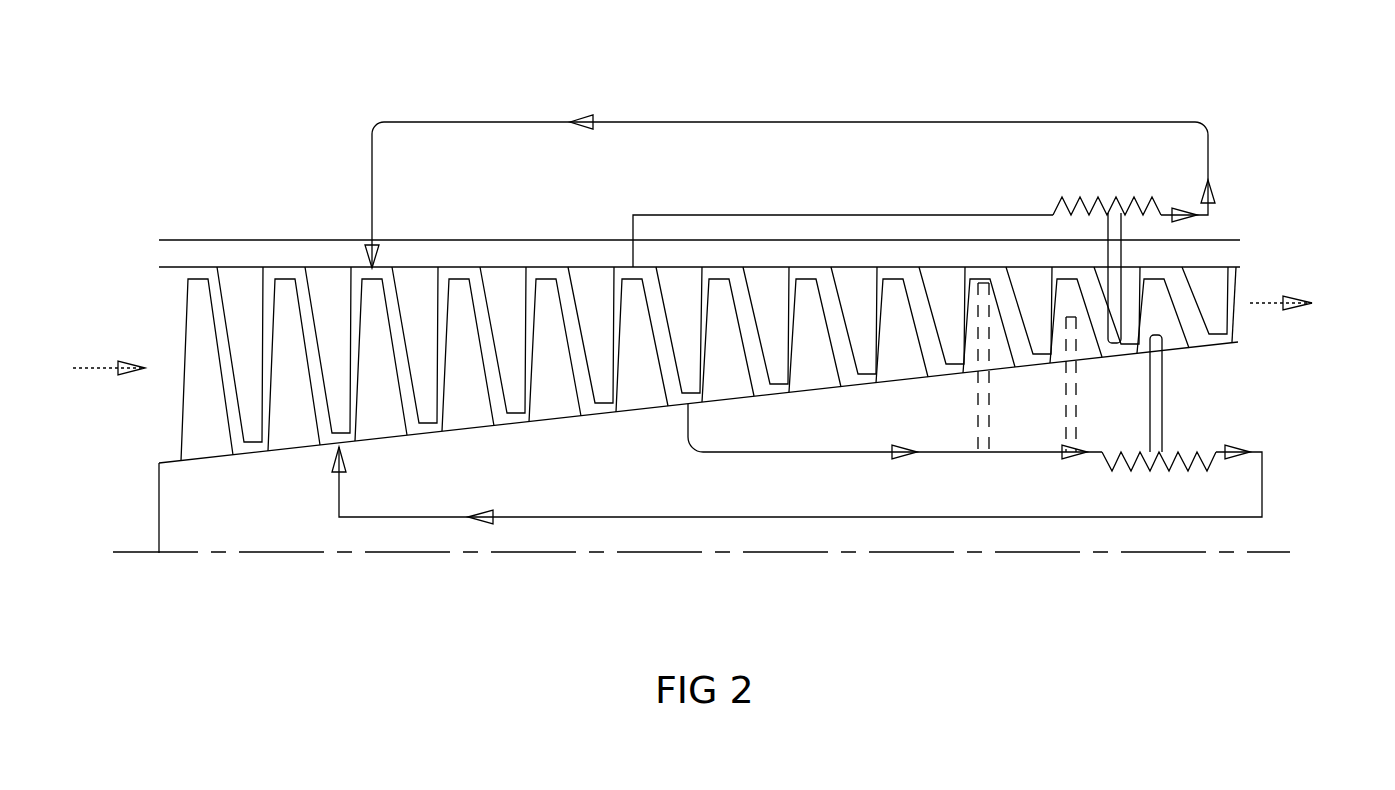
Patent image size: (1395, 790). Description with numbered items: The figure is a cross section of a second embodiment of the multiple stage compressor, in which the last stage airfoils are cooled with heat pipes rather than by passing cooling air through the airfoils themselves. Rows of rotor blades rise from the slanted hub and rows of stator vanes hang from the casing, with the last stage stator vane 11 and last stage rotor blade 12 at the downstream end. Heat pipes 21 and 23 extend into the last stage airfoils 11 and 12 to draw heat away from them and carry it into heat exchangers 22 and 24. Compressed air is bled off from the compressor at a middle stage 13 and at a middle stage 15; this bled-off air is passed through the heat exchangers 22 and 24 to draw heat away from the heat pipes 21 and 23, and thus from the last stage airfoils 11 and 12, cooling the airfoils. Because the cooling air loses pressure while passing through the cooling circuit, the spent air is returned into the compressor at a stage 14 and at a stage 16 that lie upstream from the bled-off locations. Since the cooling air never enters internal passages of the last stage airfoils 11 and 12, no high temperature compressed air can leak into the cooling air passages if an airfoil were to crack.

The last stage stator vane 11 is at (1200, 288).
The last stage rotor blade 12 is at (1158, 300).
The middle stage bleed location 13 is at (637, 215).
The upstream discharge stage 14 is at (370, 202).
The middle stage bleed location 15 is at (713, 453).
The upstream discharge stage 16 is at (337, 503).
The heat pipe 21 is at (1157, 390).
The heat exchanger 22 is at (1177, 470).
The heat pipe 23 is at (1112, 250).
The heat exchanger 24 is at (1085, 200).